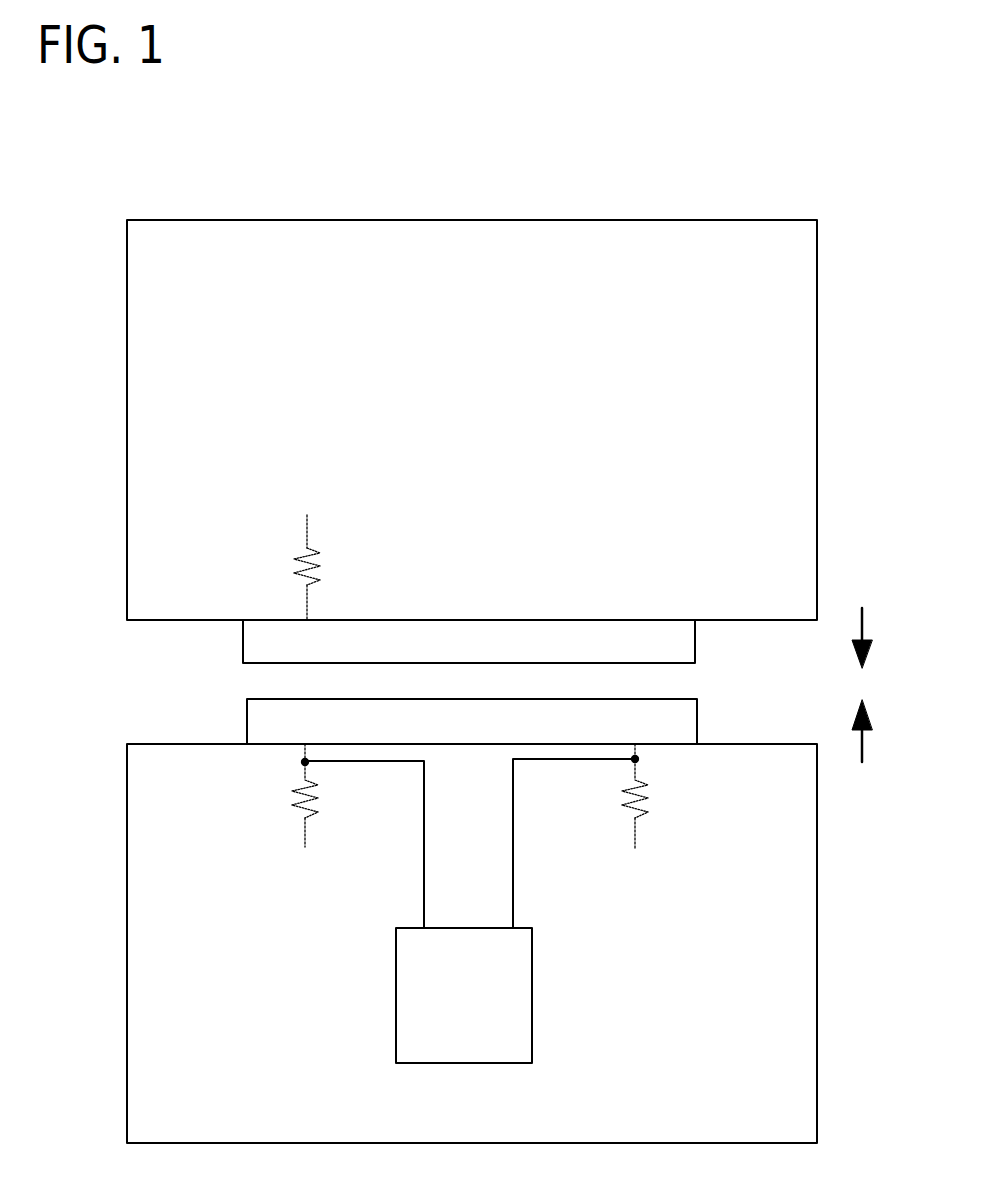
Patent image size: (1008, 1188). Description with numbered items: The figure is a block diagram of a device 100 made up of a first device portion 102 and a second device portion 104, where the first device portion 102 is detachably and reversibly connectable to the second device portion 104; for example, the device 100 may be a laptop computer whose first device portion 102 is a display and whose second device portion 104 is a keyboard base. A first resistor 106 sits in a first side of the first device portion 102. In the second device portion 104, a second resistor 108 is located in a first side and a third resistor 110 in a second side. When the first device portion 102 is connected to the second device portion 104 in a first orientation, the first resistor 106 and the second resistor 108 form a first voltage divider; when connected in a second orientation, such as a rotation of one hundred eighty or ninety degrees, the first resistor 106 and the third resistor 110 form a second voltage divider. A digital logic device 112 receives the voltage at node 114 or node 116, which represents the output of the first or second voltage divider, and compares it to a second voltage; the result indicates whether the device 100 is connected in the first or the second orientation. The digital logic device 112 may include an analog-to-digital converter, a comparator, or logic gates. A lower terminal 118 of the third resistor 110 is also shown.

The device 100 is at (697, 131).
The first device portion 102 is at (796, 597).
The second device portion 104 is at (778, 1122).
The first resistor 106 is at (290, 572).
The second resistor 108 is at (290, 806).
The third resistor 110 is at (650, 790).
The digital logic device 112 is at (532, 995).
The node 114 is at (309, 763).
The node 116 is at (633, 761).
The resistor terminal 118 is at (636, 840).